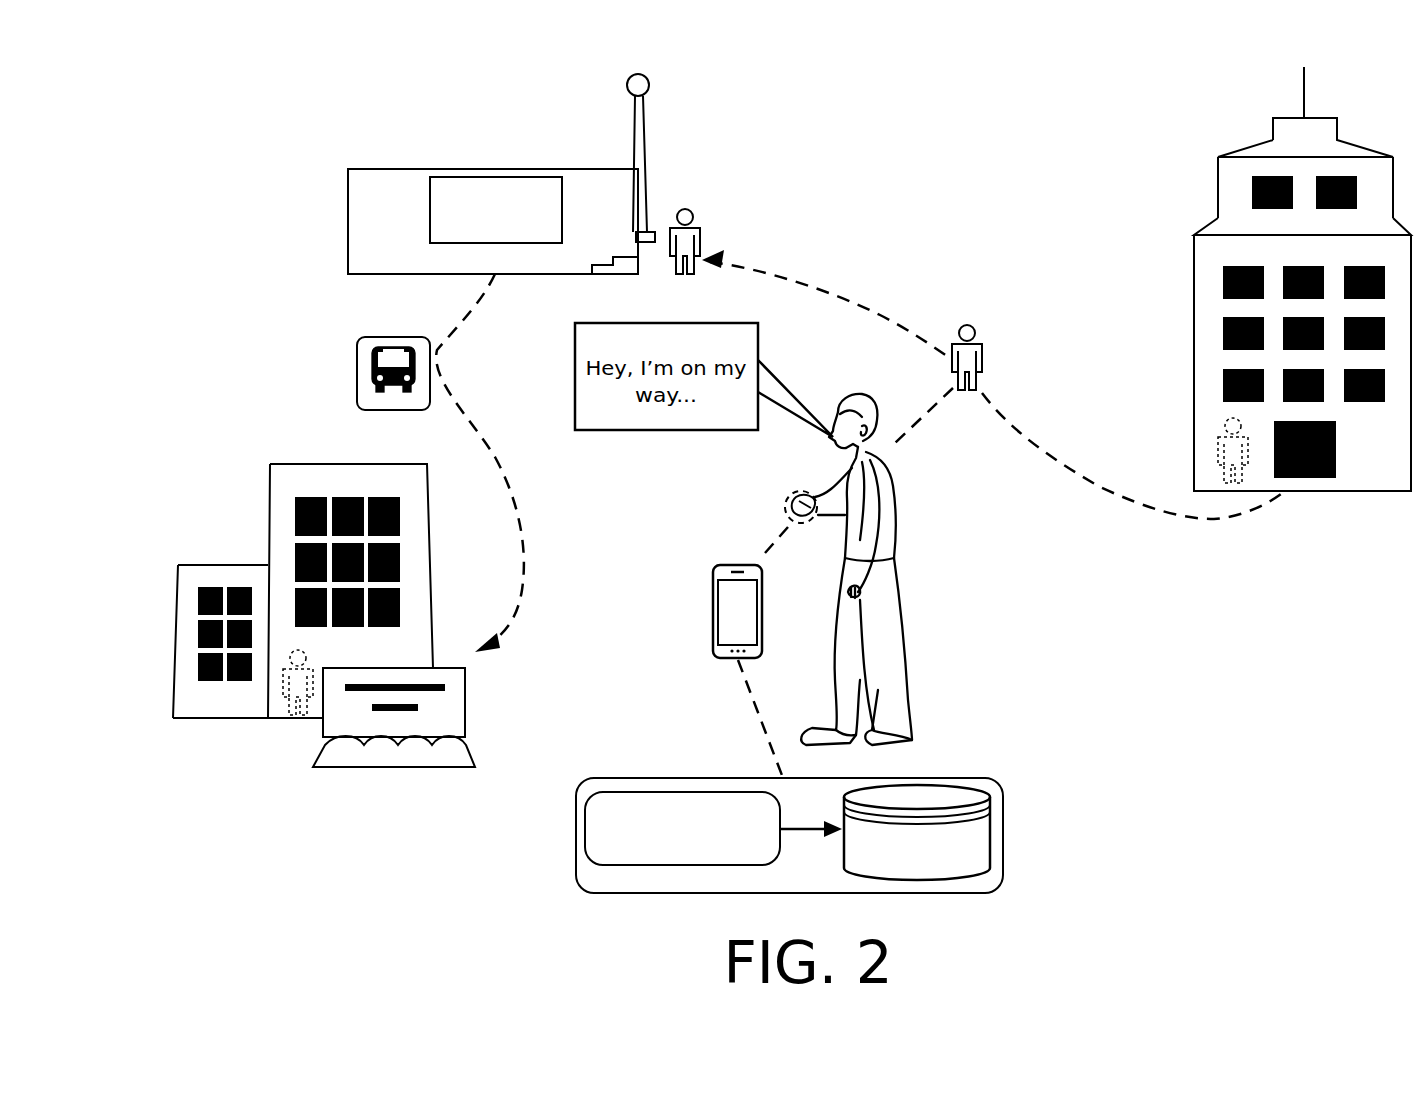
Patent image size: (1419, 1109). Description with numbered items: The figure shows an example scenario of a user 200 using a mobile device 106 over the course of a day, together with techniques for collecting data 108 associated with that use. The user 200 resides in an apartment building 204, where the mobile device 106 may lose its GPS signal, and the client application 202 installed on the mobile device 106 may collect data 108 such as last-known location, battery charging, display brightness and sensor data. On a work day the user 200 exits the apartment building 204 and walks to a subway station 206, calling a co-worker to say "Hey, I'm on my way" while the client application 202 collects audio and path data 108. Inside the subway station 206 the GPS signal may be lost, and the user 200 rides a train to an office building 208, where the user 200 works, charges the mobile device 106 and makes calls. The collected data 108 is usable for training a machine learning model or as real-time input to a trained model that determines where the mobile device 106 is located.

The user 200 is at (172, 98).
The mobile device 106 is at (713, 566).
The client application 202 is at (682, 828).
The data 108 is at (917, 832).
The apartment building 204 is at (1218, 188).
The subway station 206 is at (367, 168).
The office building 208 is at (292, 463).